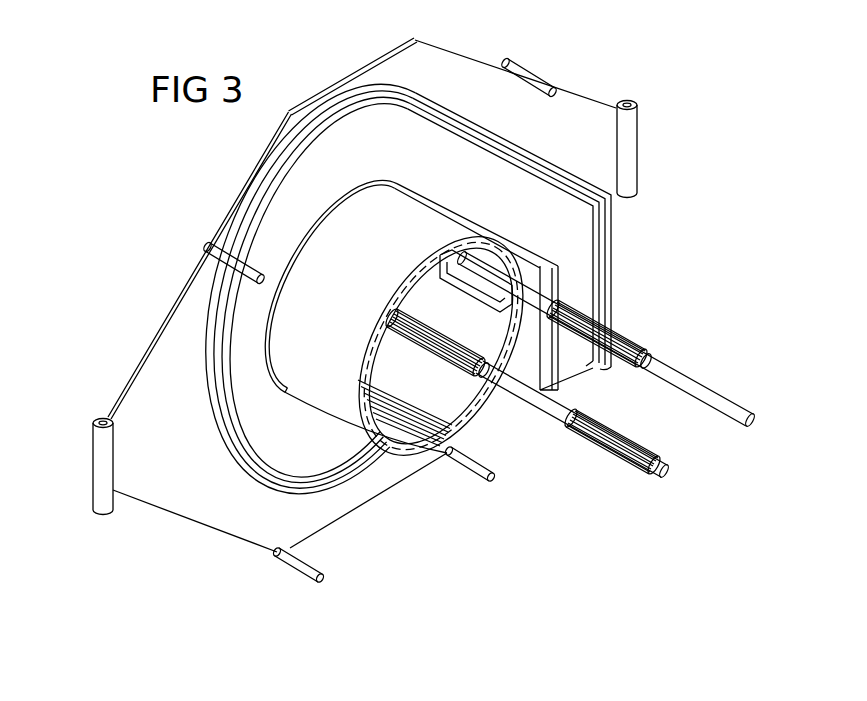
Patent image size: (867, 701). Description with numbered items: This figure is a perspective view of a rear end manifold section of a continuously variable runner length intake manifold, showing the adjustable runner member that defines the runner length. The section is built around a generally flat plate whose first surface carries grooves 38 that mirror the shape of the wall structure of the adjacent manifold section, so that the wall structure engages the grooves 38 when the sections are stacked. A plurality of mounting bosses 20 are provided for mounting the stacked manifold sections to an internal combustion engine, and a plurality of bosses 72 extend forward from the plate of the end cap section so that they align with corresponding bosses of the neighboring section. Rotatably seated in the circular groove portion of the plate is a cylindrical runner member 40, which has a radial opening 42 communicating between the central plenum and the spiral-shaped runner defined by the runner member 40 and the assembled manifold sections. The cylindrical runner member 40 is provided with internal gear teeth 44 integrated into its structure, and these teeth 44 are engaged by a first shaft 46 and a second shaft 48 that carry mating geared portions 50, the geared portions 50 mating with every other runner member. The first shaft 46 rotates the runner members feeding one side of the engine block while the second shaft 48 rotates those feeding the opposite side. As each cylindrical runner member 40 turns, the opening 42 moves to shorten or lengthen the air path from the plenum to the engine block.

The mounting bosses 20 is at (630, 148).
The grooves 38 is at (565, 165).
The cylindrical runner member 40 is at (460, 398).
The radial opening 42 is at (496, 303).
The internal gear teeth 44 is at (418, 282).
The first shaft 46 is at (702, 388).
The second shaft 48 is at (660, 468).
The geared portions 50 is at (632, 340).
The bosses 72 is at (541, 82).